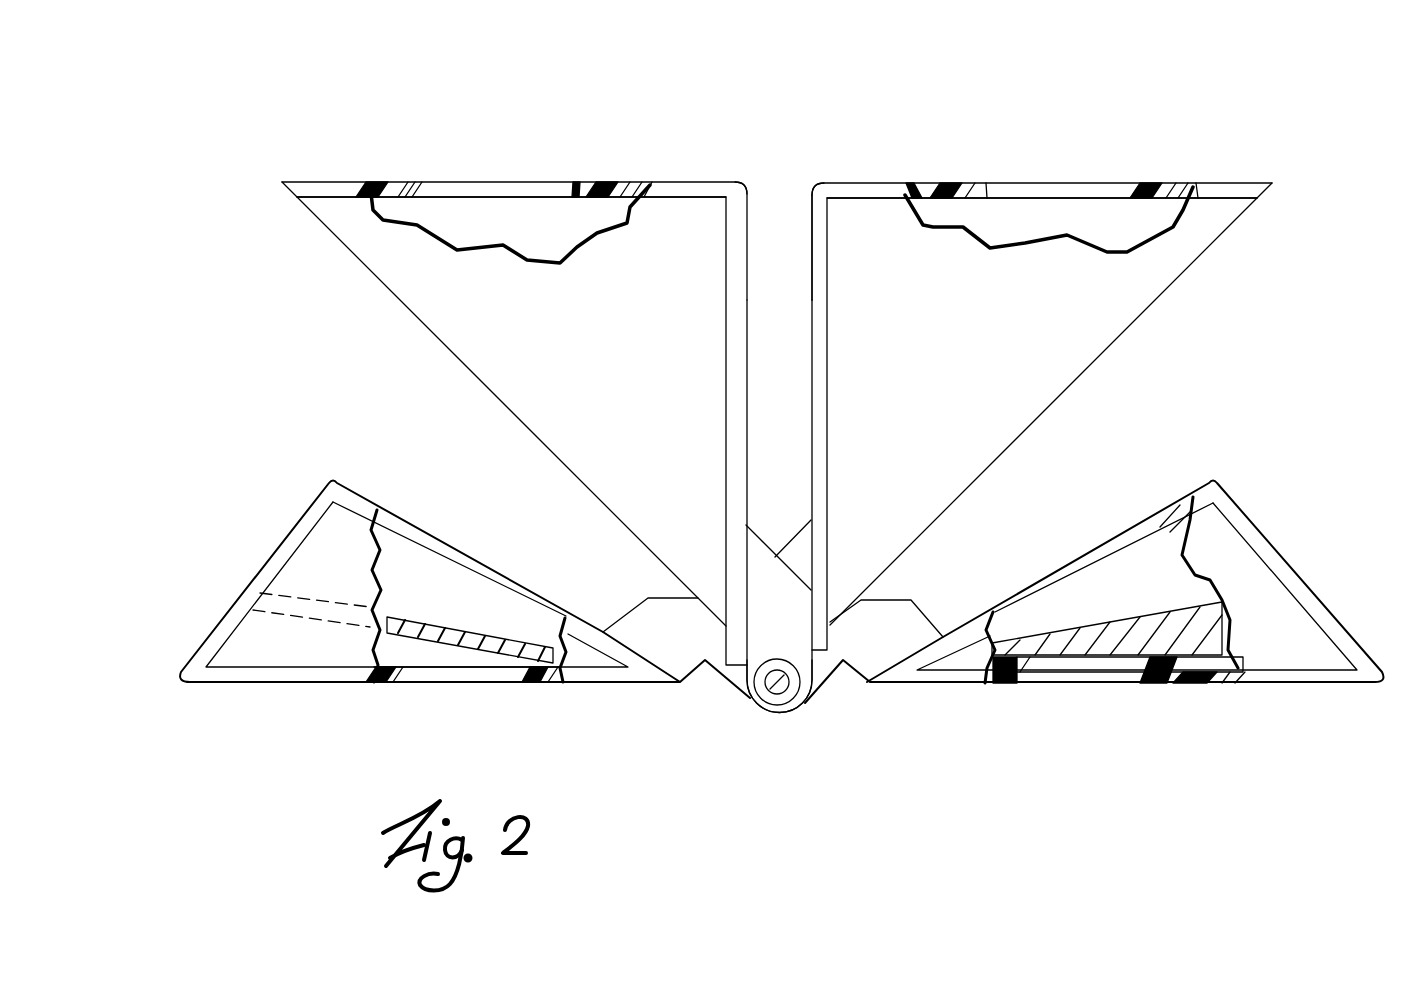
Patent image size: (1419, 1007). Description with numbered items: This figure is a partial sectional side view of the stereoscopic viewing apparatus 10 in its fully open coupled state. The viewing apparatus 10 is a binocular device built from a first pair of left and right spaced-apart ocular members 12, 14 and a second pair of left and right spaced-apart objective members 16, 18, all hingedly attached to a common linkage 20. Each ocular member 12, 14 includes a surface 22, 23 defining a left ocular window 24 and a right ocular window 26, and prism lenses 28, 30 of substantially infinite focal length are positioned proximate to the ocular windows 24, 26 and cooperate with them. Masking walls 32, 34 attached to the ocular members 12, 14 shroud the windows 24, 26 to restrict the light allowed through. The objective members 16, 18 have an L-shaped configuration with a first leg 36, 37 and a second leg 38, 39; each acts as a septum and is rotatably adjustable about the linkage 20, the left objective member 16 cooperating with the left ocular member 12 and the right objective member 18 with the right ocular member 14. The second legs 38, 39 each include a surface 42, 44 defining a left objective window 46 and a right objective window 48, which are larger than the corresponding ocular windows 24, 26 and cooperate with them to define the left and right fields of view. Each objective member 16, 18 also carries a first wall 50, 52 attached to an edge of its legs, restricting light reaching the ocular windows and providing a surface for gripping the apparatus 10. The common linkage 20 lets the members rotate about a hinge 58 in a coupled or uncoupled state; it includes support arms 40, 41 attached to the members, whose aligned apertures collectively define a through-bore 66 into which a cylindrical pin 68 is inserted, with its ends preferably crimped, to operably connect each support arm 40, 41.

The viewing apparatus 10 is at (966, 86).
The left ocular member 12 is at (255, 683).
The right ocular member 14 is at (1329, 684).
The left objective member 16 is at (370, 168).
The right objective member 18 is at (1224, 163).
The common linkage 20 is at (784, 720).
The surface 22 is at (519, 674).
The surface 23 is at (1125, 686).
The left ocular window 24 is at (438, 686).
The right ocular window 26 is at (1024, 688).
The prism lens 28 is at (495, 651).
The prism lens 30 is at (1093, 657).
The masking wall 32 is at (300, 568).
The masking wall 34 is at (1305, 628).
The first leg 36 is at (747, 400).
The first leg 37 is at (812, 262).
The second leg 38 is at (700, 181).
The second leg 39 is at (845, 181).
The support arm 40 is at (762, 592).
The support arm 41 is at (894, 630).
The surface 42 is at (490, 181).
The surface 44 is at (1036, 181).
The left objective window 46 is at (548, 180).
The right objective window 48 is at (1118, 181).
The first wall 50 is at (486, 352).
The first wall 52 is at (1047, 372).
The hinge 58 is at (801, 703).
The through-bore 66 is at (750, 700).
The cylindrical pin 68 is at (793, 686).